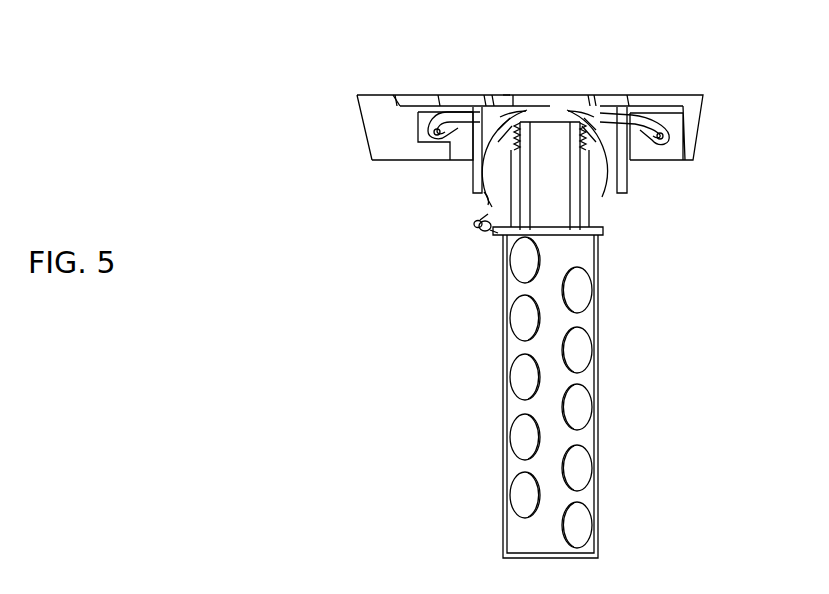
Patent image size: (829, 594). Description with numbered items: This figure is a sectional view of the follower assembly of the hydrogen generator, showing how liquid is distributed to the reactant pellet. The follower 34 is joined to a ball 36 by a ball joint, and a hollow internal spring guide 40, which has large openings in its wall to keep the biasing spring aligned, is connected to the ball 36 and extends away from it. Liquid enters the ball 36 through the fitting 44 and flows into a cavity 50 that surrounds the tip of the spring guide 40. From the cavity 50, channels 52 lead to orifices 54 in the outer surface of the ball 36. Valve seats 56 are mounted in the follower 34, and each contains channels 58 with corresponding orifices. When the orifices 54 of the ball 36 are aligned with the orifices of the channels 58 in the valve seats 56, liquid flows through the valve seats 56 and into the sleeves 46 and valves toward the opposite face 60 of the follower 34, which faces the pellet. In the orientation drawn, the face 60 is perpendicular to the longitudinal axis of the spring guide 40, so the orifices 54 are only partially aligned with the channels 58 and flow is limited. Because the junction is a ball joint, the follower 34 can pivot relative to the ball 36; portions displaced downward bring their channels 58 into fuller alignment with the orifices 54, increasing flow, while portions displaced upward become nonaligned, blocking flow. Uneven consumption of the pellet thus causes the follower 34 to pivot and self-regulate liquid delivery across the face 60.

The follower 34 is at (698, 113).
The ball 36 is at (602, 193).
The internal spring guide 40 is at (593, 323).
The fitting 44 is at (478, 225).
The sleeves 46 is at (440, 105).
The cavity 50 is at (500, 235).
The channels 52 is at (487, 195).
The orifices 54 is at (597, 124).
The valve seats 56 is at (484, 112).
The channels 58 is at (610, 122).
The face 60 is at (506, 97).